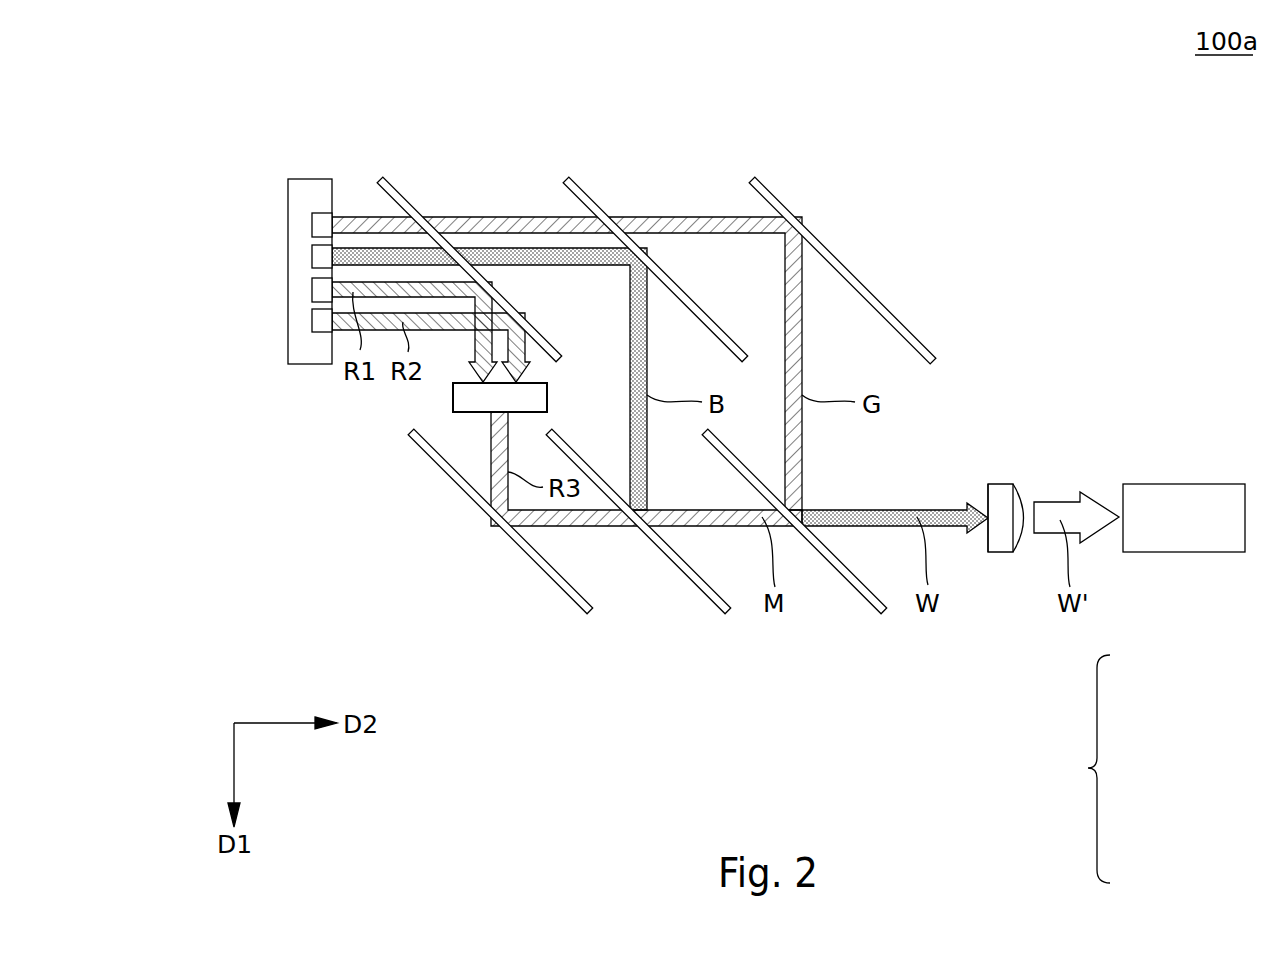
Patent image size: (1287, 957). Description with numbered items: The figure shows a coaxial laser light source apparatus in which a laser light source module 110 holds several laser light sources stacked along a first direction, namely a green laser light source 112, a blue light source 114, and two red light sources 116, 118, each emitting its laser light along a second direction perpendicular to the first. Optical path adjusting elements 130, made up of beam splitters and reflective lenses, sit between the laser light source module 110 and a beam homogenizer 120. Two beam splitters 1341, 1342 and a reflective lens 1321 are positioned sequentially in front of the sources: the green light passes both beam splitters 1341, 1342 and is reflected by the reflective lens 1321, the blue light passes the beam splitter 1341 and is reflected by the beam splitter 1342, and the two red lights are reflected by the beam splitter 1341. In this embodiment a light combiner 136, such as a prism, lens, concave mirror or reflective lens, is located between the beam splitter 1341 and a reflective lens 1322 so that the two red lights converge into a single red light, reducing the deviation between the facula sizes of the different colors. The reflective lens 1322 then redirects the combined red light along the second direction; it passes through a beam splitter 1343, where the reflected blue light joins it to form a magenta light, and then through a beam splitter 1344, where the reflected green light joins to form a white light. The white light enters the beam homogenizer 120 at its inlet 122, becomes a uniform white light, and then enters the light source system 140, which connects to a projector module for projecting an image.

The laser light source module 110 is at (312, 183).
The green laser light source 112 is at (313, 222).
The blue light source 114 is at (313, 253).
The red light source 116 is at (313, 285).
The red light source 118 is at (313, 315).
The beam homogenizer 120 is at (1003, 543).
The inlet 122 is at (987, 487).
The optical path adjusting elements 130 is at (1099, 769).
The reflective lens 1321 is at (758, 177).
The reflective lens 1322 is at (573, 597).
The beam splitter 1341 is at (383, 177).
The beam splitter 1342 is at (572, 180).
The beam splitter 1343 is at (710, 597).
The beam splitter 1344 is at (863, 595).
The light combiner 136 is at (458, 398).
The light source system 140 is at (1185, 540).